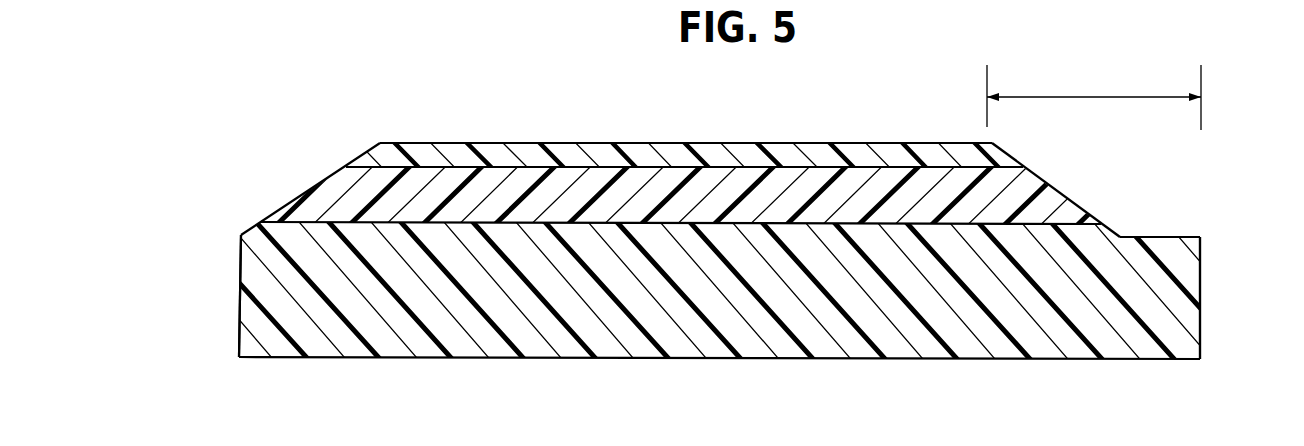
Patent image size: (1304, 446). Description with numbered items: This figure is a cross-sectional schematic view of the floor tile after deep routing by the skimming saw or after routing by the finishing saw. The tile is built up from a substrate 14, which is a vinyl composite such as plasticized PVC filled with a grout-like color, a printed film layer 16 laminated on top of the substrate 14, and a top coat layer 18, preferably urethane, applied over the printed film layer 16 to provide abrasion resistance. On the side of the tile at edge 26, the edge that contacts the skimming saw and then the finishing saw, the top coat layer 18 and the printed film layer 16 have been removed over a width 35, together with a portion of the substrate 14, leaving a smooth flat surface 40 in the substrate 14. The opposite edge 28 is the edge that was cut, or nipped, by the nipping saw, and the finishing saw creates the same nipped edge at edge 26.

The substrate 14 is at (729, 299).
The printed film layer 16 is at (671, 217).
The top coat layer 18 is at (462, 148).
The edge 26 is at (1203, 298).
The edge 28 is at (240, 293).
The width 35 is at (1108, 95).
The smooth flat surface 40 is at (1160, 237).